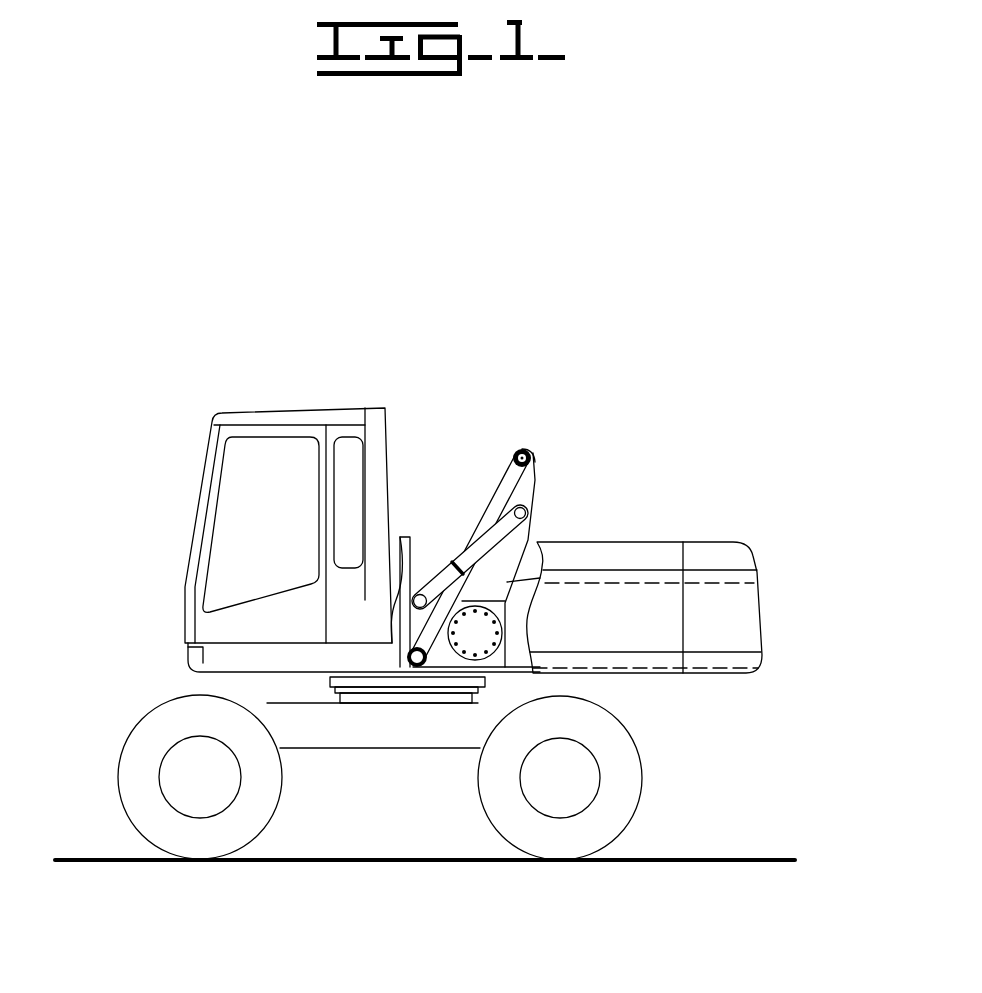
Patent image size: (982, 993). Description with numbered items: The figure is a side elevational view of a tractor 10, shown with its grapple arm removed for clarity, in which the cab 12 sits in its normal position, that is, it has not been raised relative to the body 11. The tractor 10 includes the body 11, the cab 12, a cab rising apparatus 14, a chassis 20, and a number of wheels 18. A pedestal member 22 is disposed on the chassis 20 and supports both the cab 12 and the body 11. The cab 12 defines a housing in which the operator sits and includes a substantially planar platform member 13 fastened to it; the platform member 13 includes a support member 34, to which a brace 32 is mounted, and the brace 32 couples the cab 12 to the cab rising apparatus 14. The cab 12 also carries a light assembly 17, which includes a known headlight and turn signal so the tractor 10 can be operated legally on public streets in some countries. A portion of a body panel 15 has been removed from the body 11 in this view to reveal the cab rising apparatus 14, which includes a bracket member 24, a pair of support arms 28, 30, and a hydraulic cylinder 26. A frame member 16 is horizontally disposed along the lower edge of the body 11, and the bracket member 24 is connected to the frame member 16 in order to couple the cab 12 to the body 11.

The tractor 10 is at (207, 390).
The body 11 is at (760, 528).
The cab 12 is at (300, 397).
The platform member 13 is at (290, 657).
The cab rising apparatus 14 is at (548, 500).
The body panel 15 is at (638, 578).
The frame member 16 is at (730, 622).
The light assembly 17 is at (190, 658).
The wheels 18 is at (145, 738).
The chassis 20 is at (442, 735).
The pedestal member 22 is at (399, 686).
The bracket member 24 is at (533, 480).
The hydraulic cylinder 26 is at (505, 476).
The support arm 28 is at (472, 535).
The support arm 30 is at (505, 542).
The brace 32 is at (410, 614).
The support member 34 is at (403, 535).